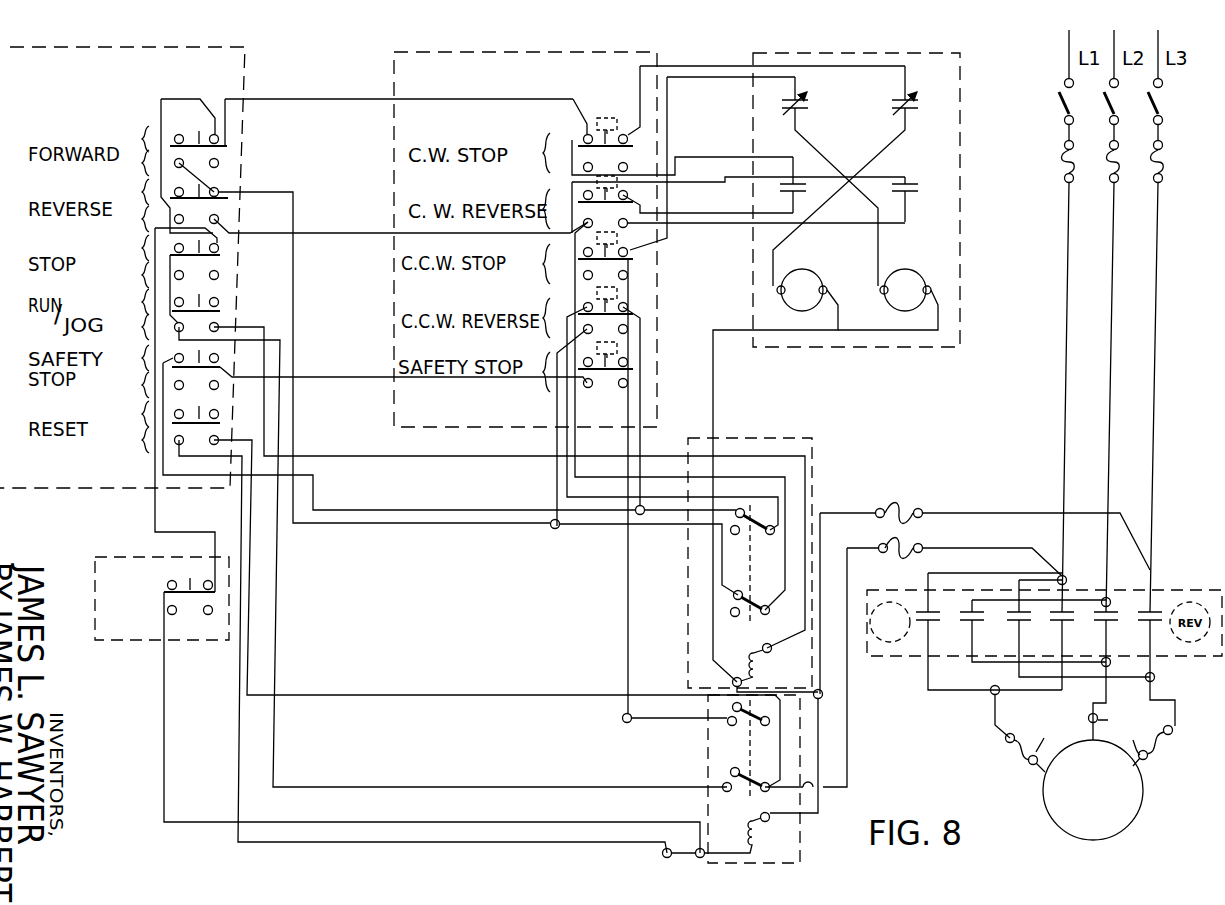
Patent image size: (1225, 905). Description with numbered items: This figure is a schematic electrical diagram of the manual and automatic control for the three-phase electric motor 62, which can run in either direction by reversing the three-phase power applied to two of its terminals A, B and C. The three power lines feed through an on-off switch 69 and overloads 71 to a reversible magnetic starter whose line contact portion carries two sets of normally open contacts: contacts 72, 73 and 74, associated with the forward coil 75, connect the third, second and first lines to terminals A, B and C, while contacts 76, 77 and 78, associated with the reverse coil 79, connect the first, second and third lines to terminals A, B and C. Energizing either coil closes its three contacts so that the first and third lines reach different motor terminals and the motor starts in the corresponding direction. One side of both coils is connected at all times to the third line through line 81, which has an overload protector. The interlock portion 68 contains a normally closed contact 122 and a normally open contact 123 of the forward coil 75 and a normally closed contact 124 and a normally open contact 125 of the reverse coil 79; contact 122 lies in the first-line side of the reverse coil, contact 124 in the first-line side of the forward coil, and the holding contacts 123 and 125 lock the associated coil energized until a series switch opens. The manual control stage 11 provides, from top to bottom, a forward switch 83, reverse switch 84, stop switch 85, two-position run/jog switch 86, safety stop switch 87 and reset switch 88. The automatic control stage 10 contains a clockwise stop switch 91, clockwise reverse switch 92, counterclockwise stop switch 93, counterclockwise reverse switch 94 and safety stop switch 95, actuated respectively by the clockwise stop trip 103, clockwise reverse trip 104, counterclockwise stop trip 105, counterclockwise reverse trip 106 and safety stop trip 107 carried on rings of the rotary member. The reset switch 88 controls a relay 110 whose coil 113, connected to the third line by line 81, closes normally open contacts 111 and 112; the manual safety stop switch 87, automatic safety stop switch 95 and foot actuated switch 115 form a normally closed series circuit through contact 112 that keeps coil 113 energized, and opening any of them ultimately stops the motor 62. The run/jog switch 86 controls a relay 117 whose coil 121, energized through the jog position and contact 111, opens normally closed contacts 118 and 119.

The automatic control stage 10 is at (470, 50).
The manual control stage 11 is at (150, 46).
The electric motor 62 is at (1143, 790).
The interlock portion 68 is at (955, 56).
The on-off switch 69 is at (1063, 105).
The overloads 71 is at (1063, 162).
The normally open contact 72 is at (932, 624).
The normally open contact 73 is at (977, 624).
The normally open contact 74 is at (1022, 624).
The forward coil 75 is at (792, 308).
The normally open contact 76 is at (1067, 624).
The normally open contact 77 is at (1110, 624).
The normally open contact 78 is at (1152, 606).
The reverse coil 79 is at (908, 270).
The line 81 is at (857, 512).
The forward switch 83 is at (227, 147).
The reverse switch 84 is at (228, 198).
The stop switch 85 is at (220, 255).
The run/jog switch 86 is at (220, 311).
The safety stop switch 87 is at (216, 387).
The reset switch 88 is at (220, 423).
The clockwise stop switch 91 is at (628, 145).
The clockwise reverse switch 92 is at (633, 203).
The counterclockwise stop switch 93 is at (633, 260).
The counterclockwise reverse switch 94 is at (633, 315).
The safety stop switch 95 is at (633, 372).
The clockwise stop trip 103 is at (630, 122).
The clockwise reverse trip 104 is at (625, 173).
The counterclockwise stop trip 105 is at (625, 235).
The counterclockwise reverse trip 106 is at (625, 282).
The safety stop trip 107 is at (625, 338).
The relay 110 is at (800, 851).
The normally open relay contact 111 is at (763, 776).
The normally open relay contact 112 is at (756, 727).
The coil 113 is at (755, 836).
The foot actuated switch 115 is at (164, 594).
The relay 117 is at (810, 488).
The normally closed contact 118 is at (762, 606).
The normally closed contact 119 is at (771, 534).
The coil 121 is at (757, 670).
The normally closed contact 122 is at (797, 104).
The normally open contact 123 is at (800, 196).
The normally closed contact 124 is at (908, 104).
The normally open contact 125 is at (906, 196).